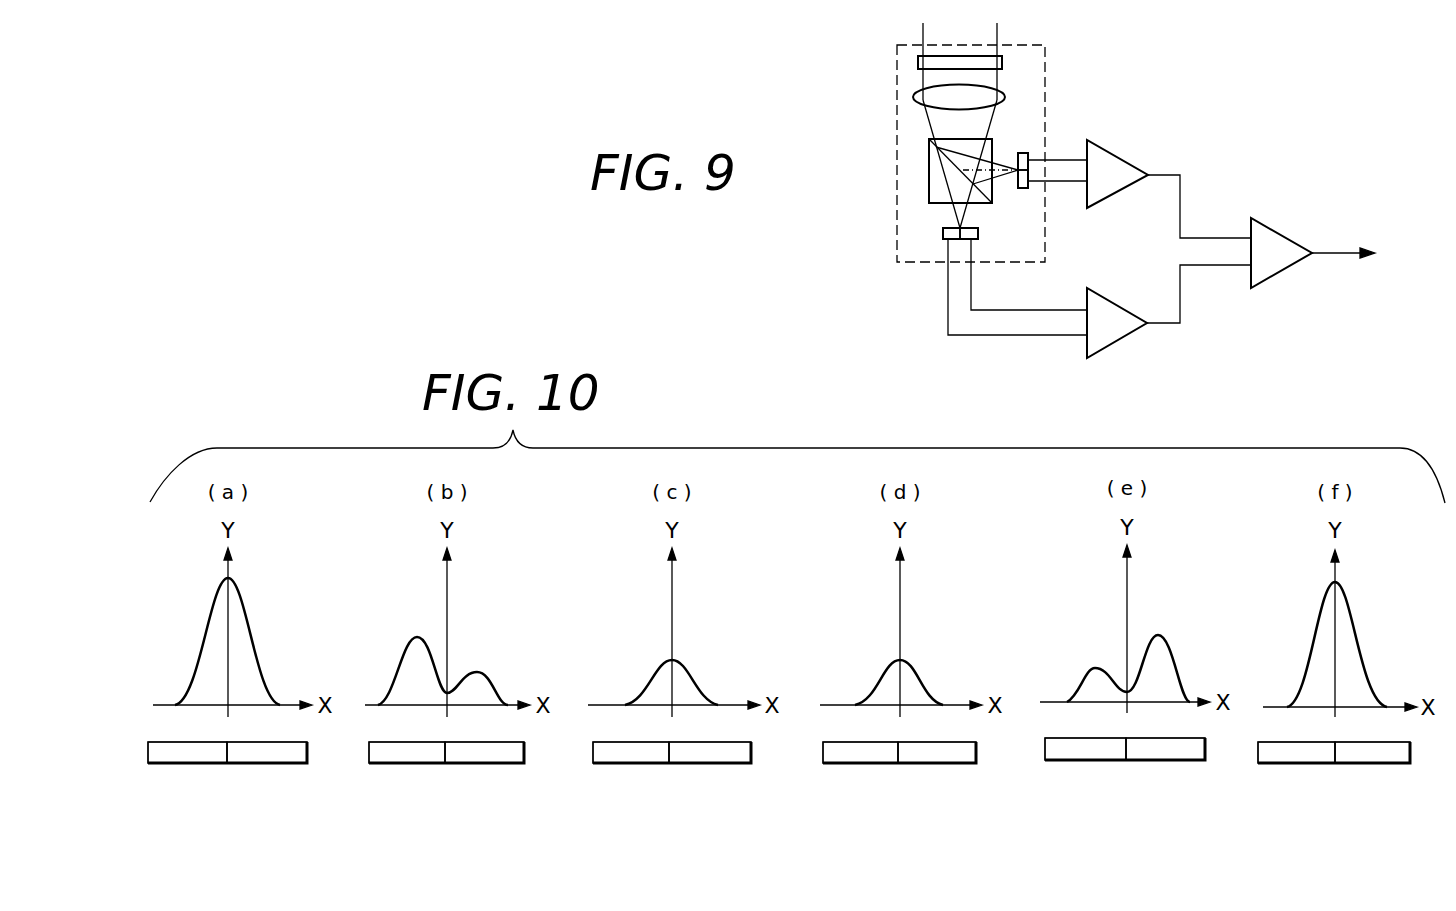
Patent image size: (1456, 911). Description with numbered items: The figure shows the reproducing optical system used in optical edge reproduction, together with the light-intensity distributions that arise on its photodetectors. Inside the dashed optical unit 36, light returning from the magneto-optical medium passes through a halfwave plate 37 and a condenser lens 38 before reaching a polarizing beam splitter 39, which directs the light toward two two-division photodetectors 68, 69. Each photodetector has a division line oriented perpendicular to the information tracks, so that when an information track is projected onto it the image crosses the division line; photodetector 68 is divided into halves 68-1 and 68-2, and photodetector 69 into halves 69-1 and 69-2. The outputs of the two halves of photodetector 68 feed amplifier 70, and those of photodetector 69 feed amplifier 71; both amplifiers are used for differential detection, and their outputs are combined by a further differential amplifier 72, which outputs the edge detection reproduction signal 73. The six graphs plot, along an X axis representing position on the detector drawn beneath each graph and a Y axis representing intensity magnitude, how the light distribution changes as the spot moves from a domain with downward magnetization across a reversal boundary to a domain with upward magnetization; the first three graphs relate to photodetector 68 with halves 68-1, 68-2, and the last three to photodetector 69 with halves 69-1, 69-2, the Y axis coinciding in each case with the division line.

In FIG. 9, the optical head unit 36 is at (897, 136).
In FIG. 9, the halfwave plate 37 is at (918, 62).
In FIG. 9, the condenser lens 38 is at (913, 97).
In FIG. 9, the polarizing beam splitter 39 is at (929, 183).
In FIG. 9, the two-division photodetector 68 is at (1028, 175).
In FIG. 10, the two-division photodetector 68 is at (240, 763).
In FIG. 9, the first division of two-division photodetector 68-1 is at (1020, 153).
In FIG. 10, the first division of two-division photodetector 68-1 is at (160, 763).
In FIG. 9, the second division of two-division photodetector 68-2 is at (1025, 188).
In FIG. 10, the second division of two-division photodetector 68-2 is at (288, 755).
In FIG. 9, the two-division photodetector 69 is at (955, 240).
In FIG. 10, the two-division photodetector 69 is at (913, 763).
In FIG. 9, the first division of two-division photodetector 69-1 is at (943, 233).
In FIG. 10, the first division of two-division photodetector 69-1 is at (835, 763).
In FIG. 9, the second division of two-division photodetector 69-2 is at (970, 240).
In FIG. 10, the second division of two-division photodetector 69-2 is at (956, 755).
In FIG. 9, the amplifier 70 is at (1137, 160).
In FIG. 9, the amplifier 71 is at (1125, 342).
In FIG. 9, the differential amplifier 72 is at (1283, 228).
In FIG. 9, the edge detection reproduction signal 73 is at (1334, 252).